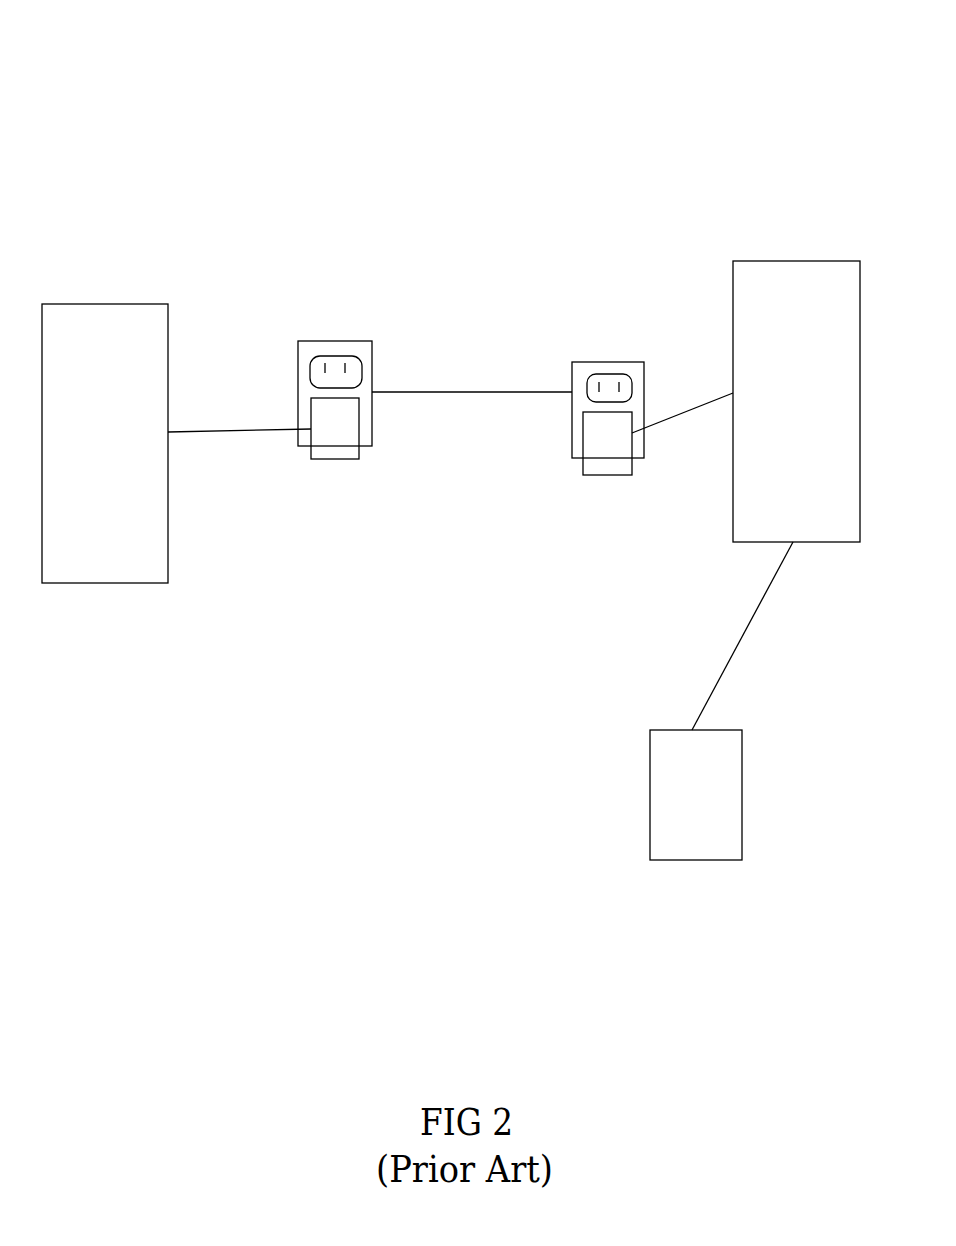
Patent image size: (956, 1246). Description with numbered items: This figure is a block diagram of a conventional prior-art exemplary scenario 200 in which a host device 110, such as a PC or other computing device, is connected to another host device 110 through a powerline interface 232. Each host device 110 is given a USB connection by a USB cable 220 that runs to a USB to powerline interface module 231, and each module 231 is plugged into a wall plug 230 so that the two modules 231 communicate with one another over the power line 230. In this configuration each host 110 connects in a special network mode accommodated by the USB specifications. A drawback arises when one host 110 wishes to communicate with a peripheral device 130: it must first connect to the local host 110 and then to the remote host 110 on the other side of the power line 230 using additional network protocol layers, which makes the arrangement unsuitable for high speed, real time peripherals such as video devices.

The exemplary scenario 200 is at (870, 39).
The host device 110 is at (168, 304).
The peripheral device 130 is at (742, 795).
The USB cable 220 is at (207, 432).
The wall plug 230 is at (330, 341).
The USB to powerline interface module 231 is at (330, 459).
The powerline interface 232 is at (445, 392).